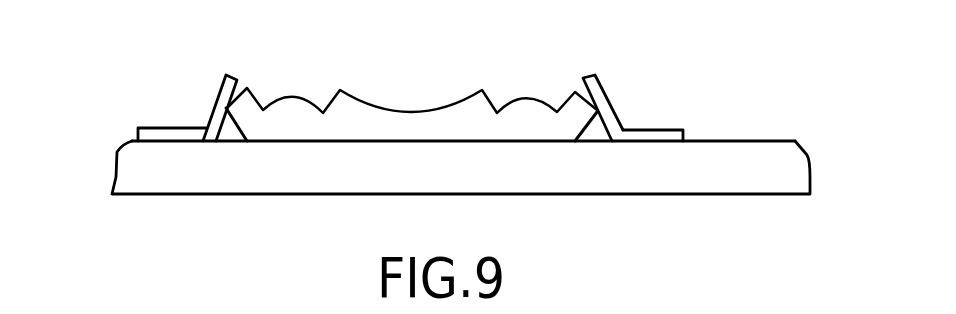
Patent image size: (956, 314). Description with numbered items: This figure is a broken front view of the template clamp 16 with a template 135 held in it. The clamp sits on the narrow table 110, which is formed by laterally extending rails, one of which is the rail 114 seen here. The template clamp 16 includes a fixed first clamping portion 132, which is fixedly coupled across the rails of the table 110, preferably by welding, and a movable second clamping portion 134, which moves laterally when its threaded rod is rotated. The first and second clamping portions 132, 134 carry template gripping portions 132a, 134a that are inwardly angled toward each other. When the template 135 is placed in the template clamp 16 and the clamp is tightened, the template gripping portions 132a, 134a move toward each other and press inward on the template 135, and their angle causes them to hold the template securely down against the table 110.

The table 110 is at (173, 185).
The rail 114 is at (737, 183).
The fixed first clamping portion 132 is at (200, 128).
The template gripping portion 132a is at (213, 89).
The movable second clamping portion 134 is at (625, 128).
The template gripping portion 134a is at (600, 83).
The template clamp 16 is at (238, 82).
The template 135 is at (437, 120).